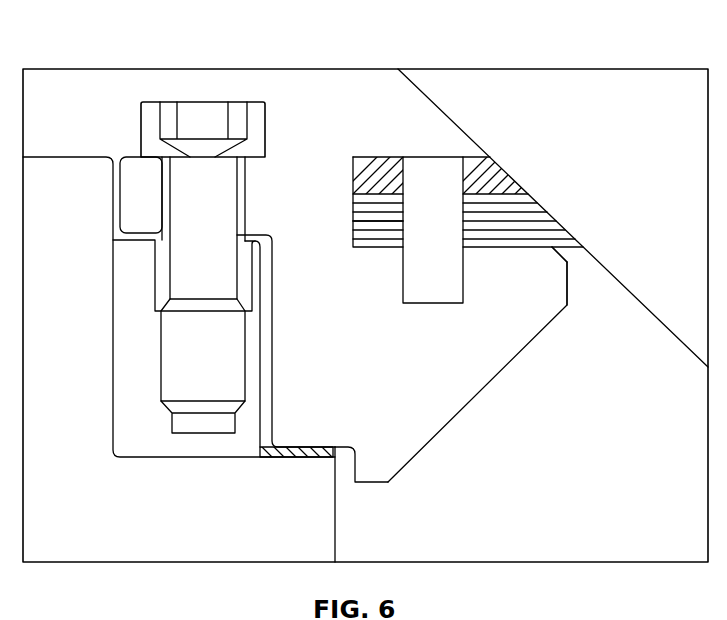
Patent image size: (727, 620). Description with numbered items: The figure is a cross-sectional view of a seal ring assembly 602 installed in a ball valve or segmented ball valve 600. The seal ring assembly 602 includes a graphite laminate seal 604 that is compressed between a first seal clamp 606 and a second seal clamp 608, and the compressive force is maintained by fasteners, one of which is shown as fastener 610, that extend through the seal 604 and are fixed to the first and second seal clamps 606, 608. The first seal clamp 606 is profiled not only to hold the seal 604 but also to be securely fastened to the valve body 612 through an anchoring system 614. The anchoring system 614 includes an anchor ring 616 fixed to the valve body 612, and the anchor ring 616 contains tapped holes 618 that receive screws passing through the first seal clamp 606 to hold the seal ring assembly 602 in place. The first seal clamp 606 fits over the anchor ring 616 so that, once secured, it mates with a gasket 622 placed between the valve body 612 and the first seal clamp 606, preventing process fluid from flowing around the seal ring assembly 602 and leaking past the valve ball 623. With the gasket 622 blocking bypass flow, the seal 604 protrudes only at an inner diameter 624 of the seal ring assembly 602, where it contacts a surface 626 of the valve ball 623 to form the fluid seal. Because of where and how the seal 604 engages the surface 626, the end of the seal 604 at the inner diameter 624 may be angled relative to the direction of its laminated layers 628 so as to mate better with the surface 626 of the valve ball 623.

The ball valve or segmented ball valve 600 is at (139, 60).
The seal ring assembly 602 is at (416, 480).
The graphite laminate seal 604 is at (495, 213).
The first seal clamp 606 is at (457, 403).
The second seal clamp 608 is at (375, 168).
The fastener 610 is at (425, 268).
The valve body 612 is at (327, 542).
The anchoring system 614 is at (225, 93).
The anchor ring 616 is at (127, 303).
The tapped holes 618 is at (168, 376).
The gasket 622 is at (300, 457).
The valve ball 623 is at (637, 293).
The inner diameter 624 is at (553, 239).
The surface 626 is at (665, 335).
The laminated layers 628 is at (373, 223).